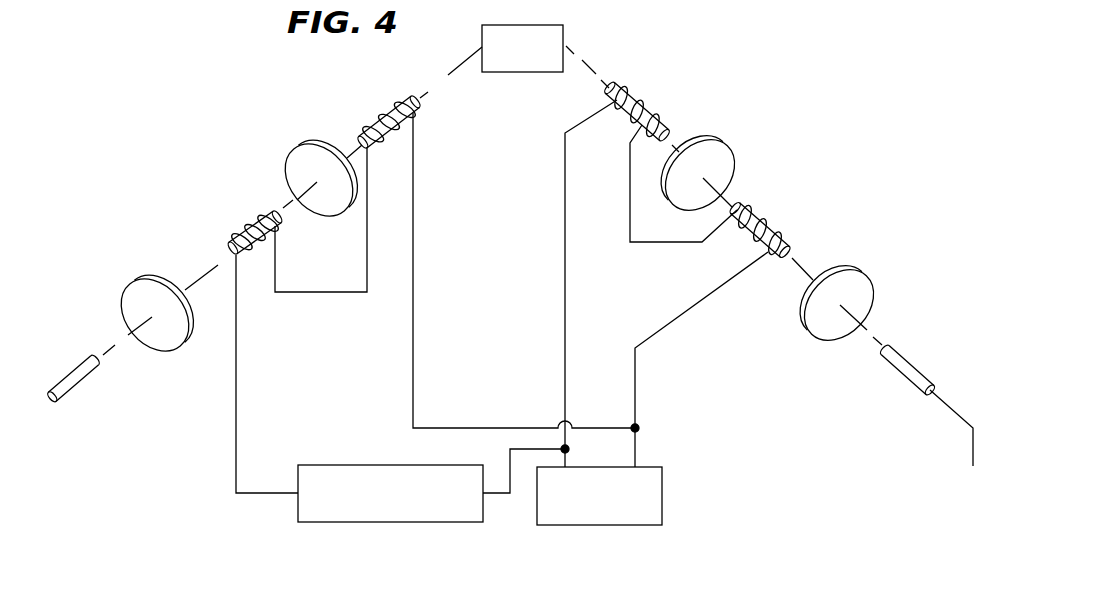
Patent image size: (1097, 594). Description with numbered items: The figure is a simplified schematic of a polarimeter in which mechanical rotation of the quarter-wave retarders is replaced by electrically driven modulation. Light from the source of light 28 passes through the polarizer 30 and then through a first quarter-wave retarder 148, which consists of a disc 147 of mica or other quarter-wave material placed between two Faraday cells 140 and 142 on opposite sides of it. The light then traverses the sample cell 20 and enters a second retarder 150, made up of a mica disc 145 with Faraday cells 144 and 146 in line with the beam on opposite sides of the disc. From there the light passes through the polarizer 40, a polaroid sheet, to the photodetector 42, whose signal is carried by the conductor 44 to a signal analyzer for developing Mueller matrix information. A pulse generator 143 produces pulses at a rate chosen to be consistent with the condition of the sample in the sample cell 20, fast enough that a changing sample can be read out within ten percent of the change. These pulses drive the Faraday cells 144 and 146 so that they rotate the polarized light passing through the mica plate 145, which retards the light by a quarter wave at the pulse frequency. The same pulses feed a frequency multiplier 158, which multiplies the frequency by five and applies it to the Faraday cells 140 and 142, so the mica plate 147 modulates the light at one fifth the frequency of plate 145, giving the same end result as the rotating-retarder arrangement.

The sample cell 20 is at (552, 34).
The source of light 28 is at (88, 372).
The polarizer 30 is at (173, 352).
The polarizer 40 is at (868, 289).
The photodetector 42 is at (921, 376).
The conductor 44 is at (958, 419).
The Faraday cell 140 is at (273, 210).
The Faraday cell 142 is at (393, 101).
The pulse generator 143 is at (662, 519).
The Faraday cell 144 is at (656, 102).
The mica disc 145 is at (732, 163).
The Faraday cell 146 is at (775, 220).
The disc 147 is at (318, 207).
The first quarter-wave retarder 148 is at (312, 168).
The second retarder 150 is at (721, 169).
The frequency multiplier 158 is at (410, 518).